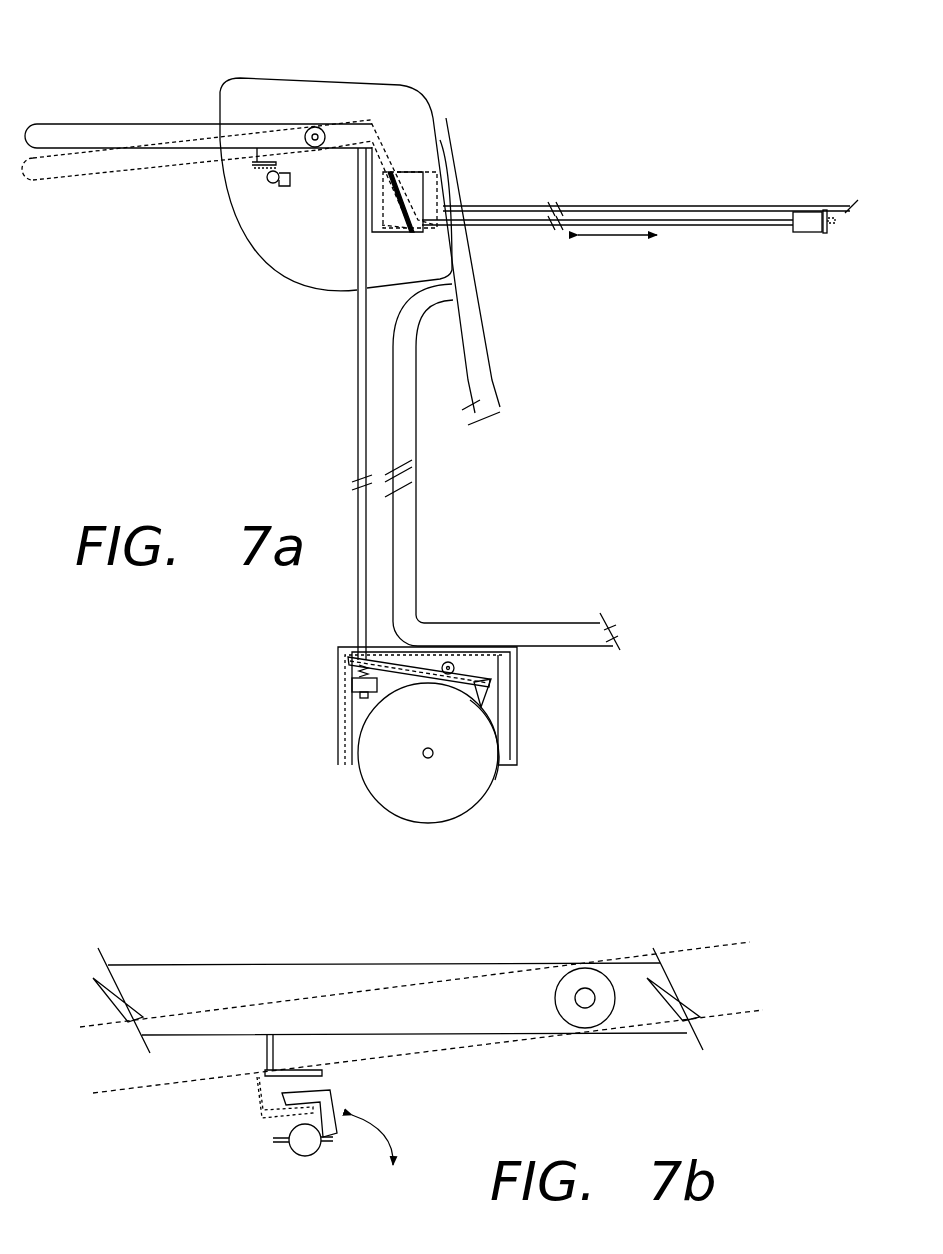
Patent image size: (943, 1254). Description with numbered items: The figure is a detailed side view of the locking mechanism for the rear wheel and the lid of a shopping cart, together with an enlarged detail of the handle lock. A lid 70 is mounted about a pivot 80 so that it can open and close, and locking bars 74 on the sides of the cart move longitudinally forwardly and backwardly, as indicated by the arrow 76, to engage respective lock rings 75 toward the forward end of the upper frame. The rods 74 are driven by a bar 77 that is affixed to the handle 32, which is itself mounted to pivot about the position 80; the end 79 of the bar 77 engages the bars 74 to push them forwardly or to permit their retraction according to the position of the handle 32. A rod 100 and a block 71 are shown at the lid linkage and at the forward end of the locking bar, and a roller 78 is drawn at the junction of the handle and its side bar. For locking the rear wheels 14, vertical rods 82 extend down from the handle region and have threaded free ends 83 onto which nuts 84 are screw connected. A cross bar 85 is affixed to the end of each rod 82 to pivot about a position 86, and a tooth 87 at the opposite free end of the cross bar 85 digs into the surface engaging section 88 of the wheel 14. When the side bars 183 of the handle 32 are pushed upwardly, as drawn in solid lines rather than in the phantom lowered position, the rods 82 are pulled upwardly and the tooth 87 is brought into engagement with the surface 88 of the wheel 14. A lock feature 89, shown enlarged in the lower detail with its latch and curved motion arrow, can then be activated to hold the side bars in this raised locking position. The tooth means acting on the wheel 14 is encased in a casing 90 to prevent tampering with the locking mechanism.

In FIG. 7A, the handle 32 is at (102, 115).
In FIG. 7A, the side bars 183 is at (268, 117).
In FIG. 7B, the side bars 183 is at (328, 965).
In FIG. 7A, the pulley 78 is at (317, 127).
In FIG. 7B, the pulley 78 is at (585, 995).
In FIG. 7A, the lock feature 89 is at (266, 177).
In FIG. 7B, the lock feature 89 is at (298, 1150).
In FIG. 7A, the bar 77 is at (400, 183).
In FIG. 7A, the end of bar 79 is at (417, 235).
In FIG. 7A, the connecting rod 100 is at (443, 207).
In FIG. 7A, the lid 70 is at (697, 206).
In FIG. 7A, the locking bars 74 is at (697, 226).
In FIG. 7A, the arrow 76 is at (627, 238).
In FIG. 7A, the block 71 is at (798, 233).
In FIG. 7A, the lock rings 75 is at (826, 233).
In FIG. 7A, the vertical rods 82 is at (358, 447).
In FIG. 7A, the pivot 80 is at (447, 253).
In FIG. 7A, the casing 90 is at (519, 758).
In FIG. 7A, the rear wheel 14 is at (370, 790).
In FIG. 7A, the surface engaging section 88 is at (497, 738).
In FIG. 7A, the cross bar 85 is at (405, 668).
In FIG. 7A, the pivot position 86 is at (449, 662).
In FIG. 7A, the tooth 87 is at (490, 688).
In FIG. 7A, the nut 84 is at (352, 681).
In FIG. 7A, the free end 83 is at (364, 700).